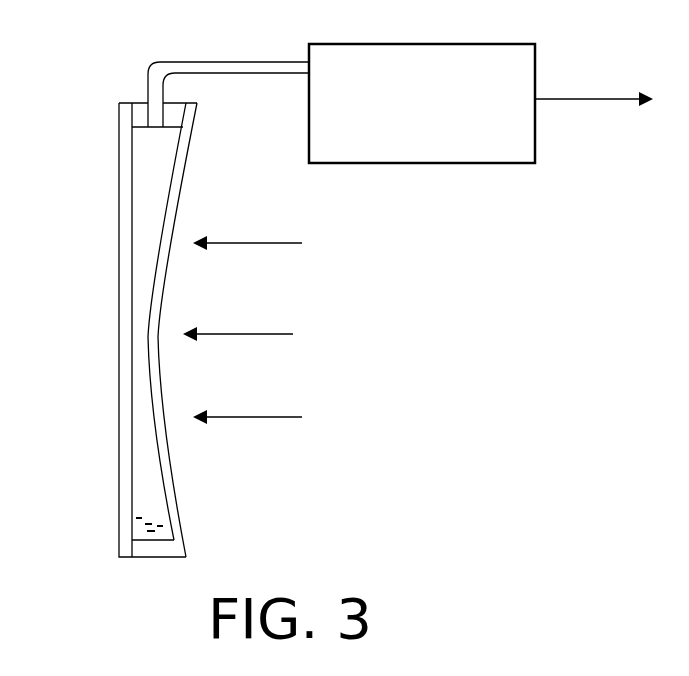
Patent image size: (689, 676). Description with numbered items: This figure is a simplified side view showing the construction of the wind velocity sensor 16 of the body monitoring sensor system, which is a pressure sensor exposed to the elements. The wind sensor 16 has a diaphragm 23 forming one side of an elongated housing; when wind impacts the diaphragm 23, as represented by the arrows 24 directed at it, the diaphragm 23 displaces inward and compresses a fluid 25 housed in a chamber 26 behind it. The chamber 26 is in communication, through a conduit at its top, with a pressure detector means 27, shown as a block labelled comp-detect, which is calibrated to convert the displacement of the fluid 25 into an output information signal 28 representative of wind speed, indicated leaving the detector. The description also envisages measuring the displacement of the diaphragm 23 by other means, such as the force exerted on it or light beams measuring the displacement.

The wind velocity sensor 16 is at (108, 258).
The diaphragm 23 is at (172, 458).
The arrows 24 is at (252, 243).
The fluid 25 is at (140, 528).
The chamber 26 is at (158, 137).
The pressure detector means 27 is at (422, 163).
The output information signal 28 is at (573, 99).